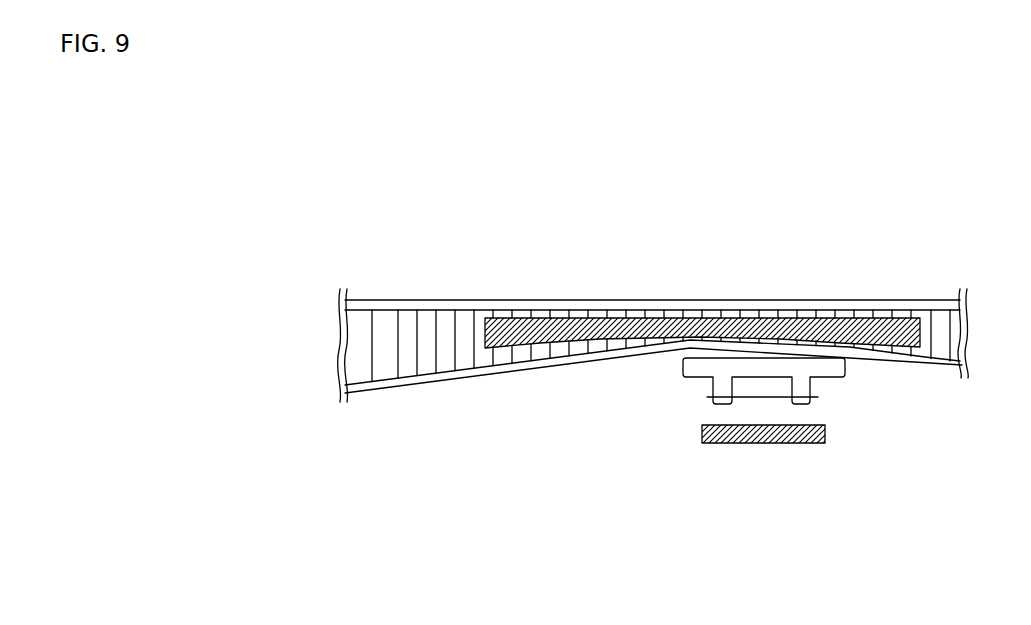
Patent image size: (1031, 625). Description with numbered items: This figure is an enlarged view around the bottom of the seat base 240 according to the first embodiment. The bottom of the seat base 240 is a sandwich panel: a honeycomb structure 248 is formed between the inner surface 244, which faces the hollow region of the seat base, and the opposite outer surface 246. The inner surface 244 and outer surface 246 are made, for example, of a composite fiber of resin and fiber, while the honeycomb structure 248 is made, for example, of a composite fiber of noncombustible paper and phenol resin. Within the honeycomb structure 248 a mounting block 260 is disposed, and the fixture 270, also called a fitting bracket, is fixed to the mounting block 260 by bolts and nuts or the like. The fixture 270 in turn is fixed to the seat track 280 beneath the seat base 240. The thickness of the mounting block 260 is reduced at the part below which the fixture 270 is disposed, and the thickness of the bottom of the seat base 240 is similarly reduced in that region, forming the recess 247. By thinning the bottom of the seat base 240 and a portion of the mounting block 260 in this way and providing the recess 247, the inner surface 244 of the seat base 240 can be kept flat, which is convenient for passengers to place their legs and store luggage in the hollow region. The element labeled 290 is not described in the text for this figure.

The seat base 240 is at (624, 360).
The inner surface 244 is at (432, 302).
The outer surface 246 is at (370, 392).
The recess 247 is at (695, 348).
The honeycomb structure 248 is at (373, 353).
The mounting block 260 is at (553, 318).
The fixture 270 is at (845, 374).
The seat track 280 is at (757, 440).
The adhesive layer 290 is at (768, 398).